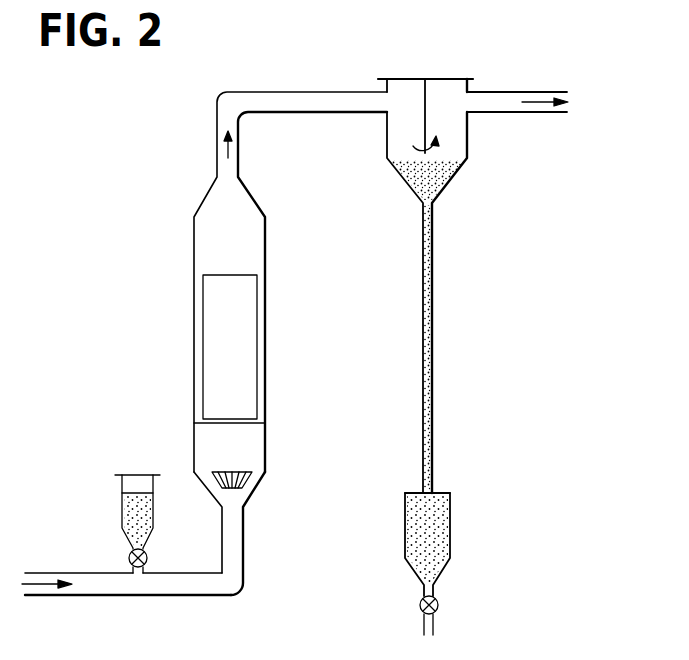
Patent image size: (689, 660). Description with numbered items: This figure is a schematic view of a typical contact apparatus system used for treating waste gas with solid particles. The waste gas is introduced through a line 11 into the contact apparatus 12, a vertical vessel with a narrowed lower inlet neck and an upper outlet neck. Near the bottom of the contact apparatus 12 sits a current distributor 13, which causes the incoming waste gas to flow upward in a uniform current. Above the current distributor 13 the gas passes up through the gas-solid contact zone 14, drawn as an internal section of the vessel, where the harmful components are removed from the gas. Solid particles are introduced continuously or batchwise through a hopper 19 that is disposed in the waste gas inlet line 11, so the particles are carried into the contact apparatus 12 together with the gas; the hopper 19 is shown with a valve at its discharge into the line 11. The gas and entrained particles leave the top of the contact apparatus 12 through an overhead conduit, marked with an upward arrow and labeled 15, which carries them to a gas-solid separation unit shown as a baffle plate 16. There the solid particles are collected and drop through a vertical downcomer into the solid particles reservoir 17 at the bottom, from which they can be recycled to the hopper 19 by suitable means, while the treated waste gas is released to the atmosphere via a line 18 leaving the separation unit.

The line 11 is at (33, 583).
The contact apparatus 12 is at (265, 240).
The current distributor 13 is at (233, 470).
The gas-solid contact zone 14 is at (235, 333).
The overhead gas outlet 15 is at (232, 155).
The baffle plate 16 is at (425, 130).
The solid particles reservoir 17 is at (450, 512).
The line 18 is at (535, 104).
The hopper 19 is at (128, 509).